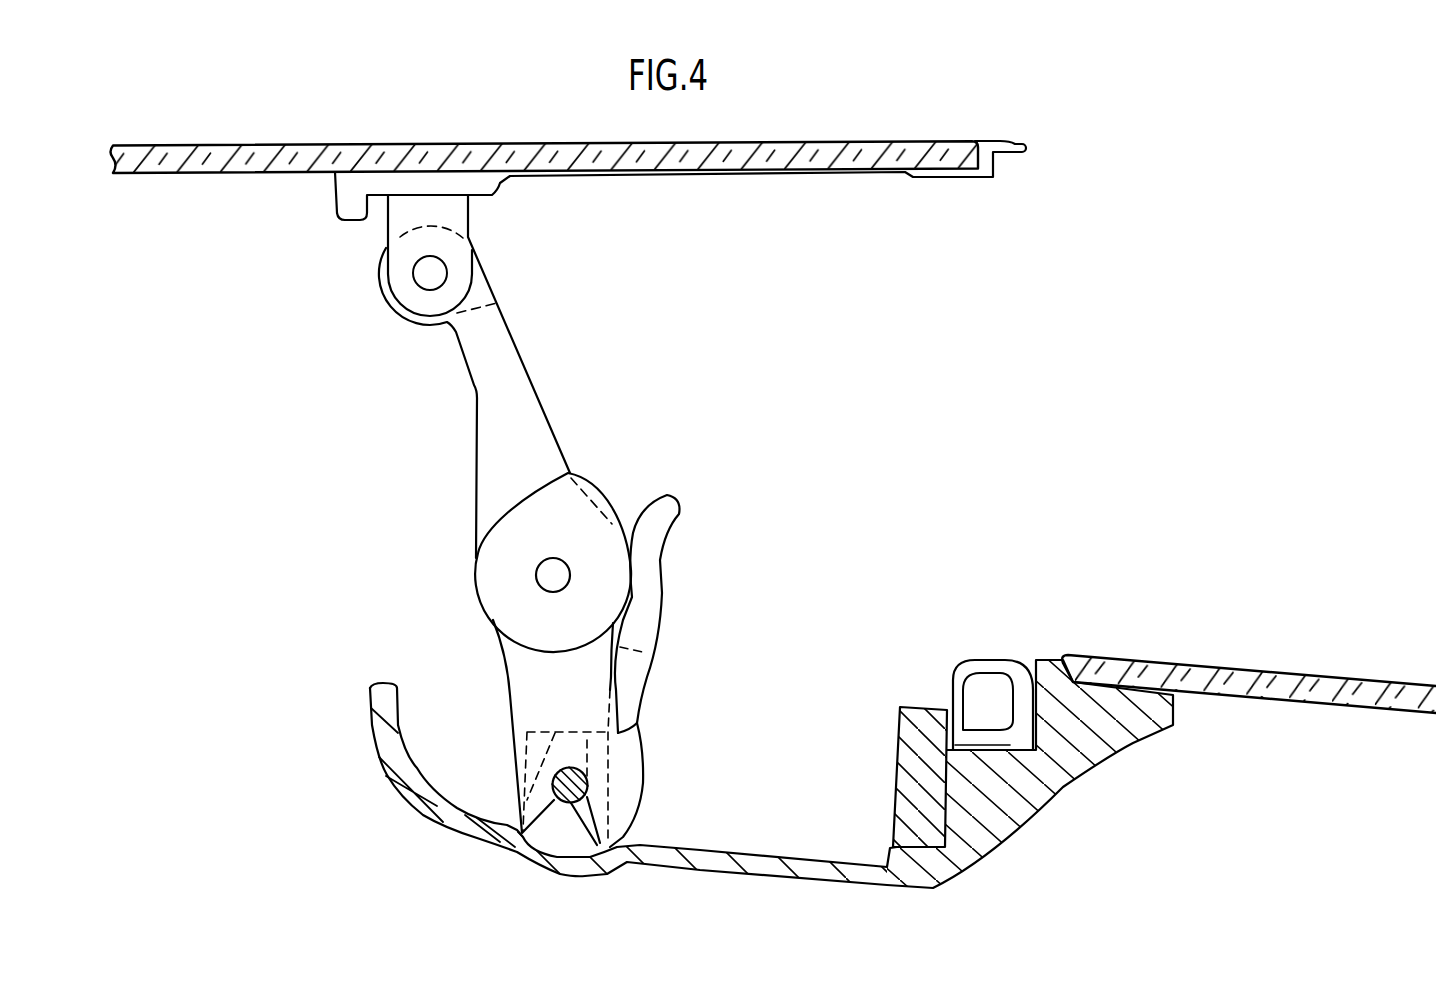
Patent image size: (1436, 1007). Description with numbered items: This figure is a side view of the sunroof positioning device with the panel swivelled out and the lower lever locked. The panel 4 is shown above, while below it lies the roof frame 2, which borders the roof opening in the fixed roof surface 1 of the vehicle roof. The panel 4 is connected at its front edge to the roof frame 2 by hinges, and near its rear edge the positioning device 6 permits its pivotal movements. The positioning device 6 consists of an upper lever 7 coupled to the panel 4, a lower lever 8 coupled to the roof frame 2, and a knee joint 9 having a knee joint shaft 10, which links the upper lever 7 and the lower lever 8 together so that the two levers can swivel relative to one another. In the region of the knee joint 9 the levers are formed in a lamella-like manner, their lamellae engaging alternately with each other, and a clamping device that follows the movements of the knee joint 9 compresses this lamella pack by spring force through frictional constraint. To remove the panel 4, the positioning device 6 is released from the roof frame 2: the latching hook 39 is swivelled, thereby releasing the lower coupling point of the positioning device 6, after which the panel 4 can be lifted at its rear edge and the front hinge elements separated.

The fixed roof surface 1 is at (1298, 683).
The roof frame 2 is at (757, 866).
The panel 4 is at (796, 150).
The positioning device 6 is at (556, 420).
The upper lever 7 is at (503, 361).
The lower lever 8 is at (535, 673).
The knee joint 9 is at (471, 590).
The knee joint shaft 10 is at (553, 575).
The latching hook 39 is at (647, 613).